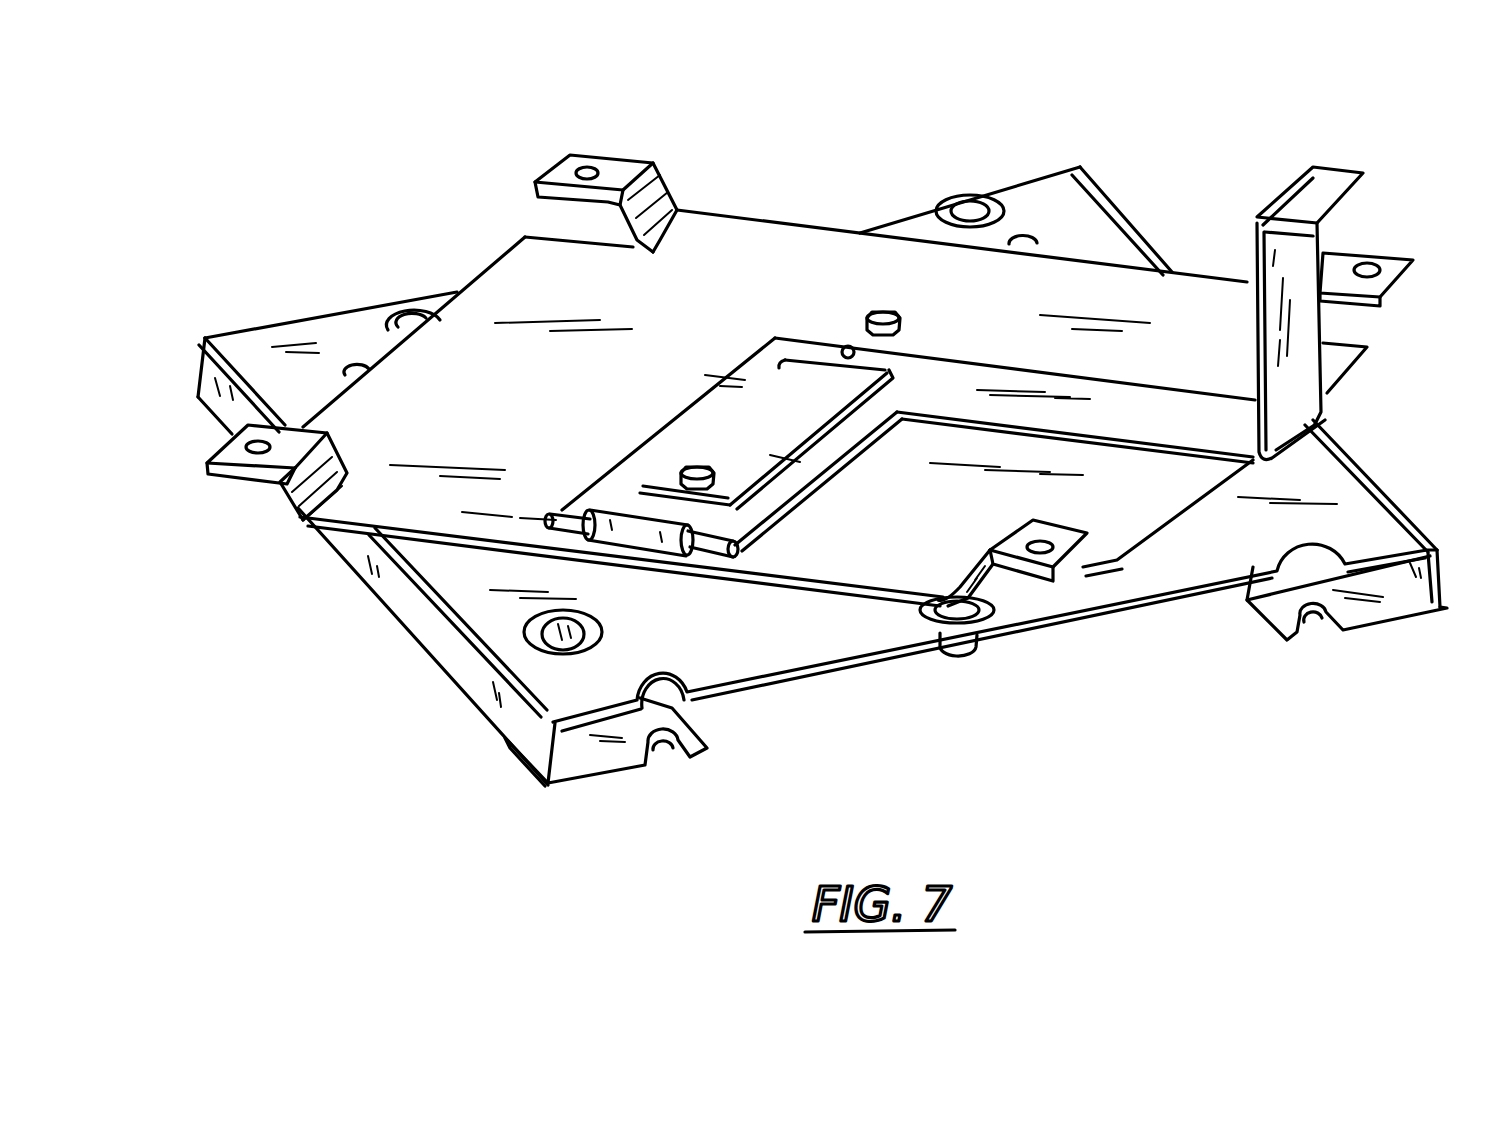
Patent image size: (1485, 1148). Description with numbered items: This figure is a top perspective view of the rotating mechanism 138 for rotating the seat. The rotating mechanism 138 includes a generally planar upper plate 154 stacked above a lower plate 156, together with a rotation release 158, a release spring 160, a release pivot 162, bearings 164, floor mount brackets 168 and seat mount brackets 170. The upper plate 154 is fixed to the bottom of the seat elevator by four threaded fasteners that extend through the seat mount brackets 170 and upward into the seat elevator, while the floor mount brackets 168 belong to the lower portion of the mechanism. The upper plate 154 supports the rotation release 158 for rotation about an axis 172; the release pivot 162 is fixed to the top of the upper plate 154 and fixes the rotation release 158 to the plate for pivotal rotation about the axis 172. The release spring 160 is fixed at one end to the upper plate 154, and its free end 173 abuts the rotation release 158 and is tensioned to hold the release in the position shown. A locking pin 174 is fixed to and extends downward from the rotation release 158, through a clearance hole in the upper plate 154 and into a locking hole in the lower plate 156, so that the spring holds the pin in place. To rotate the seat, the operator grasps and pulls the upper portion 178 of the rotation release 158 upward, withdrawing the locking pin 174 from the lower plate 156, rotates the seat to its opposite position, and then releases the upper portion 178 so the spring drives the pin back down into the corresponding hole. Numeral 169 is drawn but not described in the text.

The rotating mechanism 138 is at (1250, 126).
The upper plate 154 is at (777, 258).
The lower plate 156 is at (853, 638).
The rotation release 158 is at (1330, 170).
The release spring 160 is at (765, 393).
The release pivot 162 is at (640, 505).
The bearings 164 is at (977, 200).
The floor mount brackets 168 is at (593, 775).
The nut 169 is at (879, 312).
The seat mount brackets 170 is at (617, 176).
The axis 172 is at (735, 548).
The free end 173 is at (858, 382).
The locking pin 174 is at (845, 345).
The upper portion 178 is at (1305, 197).